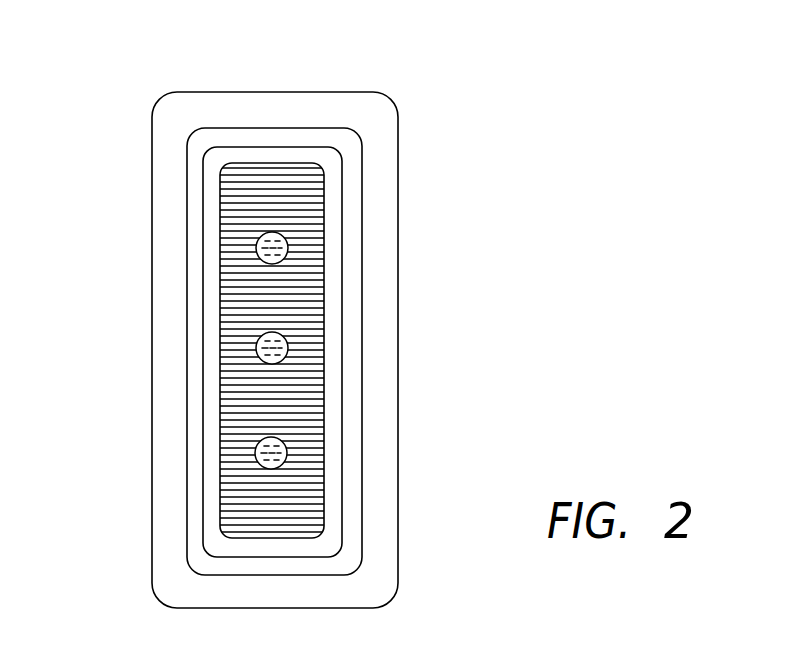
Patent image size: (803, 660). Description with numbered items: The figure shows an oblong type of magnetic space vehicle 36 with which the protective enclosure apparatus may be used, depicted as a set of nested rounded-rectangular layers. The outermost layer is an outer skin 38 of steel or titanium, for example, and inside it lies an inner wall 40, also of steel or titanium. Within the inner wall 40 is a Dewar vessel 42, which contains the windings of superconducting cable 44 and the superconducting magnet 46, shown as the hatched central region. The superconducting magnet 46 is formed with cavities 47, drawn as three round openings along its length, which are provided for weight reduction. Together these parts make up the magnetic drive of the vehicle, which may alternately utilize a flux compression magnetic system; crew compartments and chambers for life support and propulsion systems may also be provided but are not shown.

The magnetic space vehicle 36 is at (273, 322).
The outer skin 38 is at (397, 275).
The inner wall 40 is at (188, 160).
The Dewar vessel 42 is at (203, 400).
The windings of superconducting cable 44 is at (218, 287).
The superconducting magnet 46 is at (220, 323).
The cavities 47 is at (258, 259).